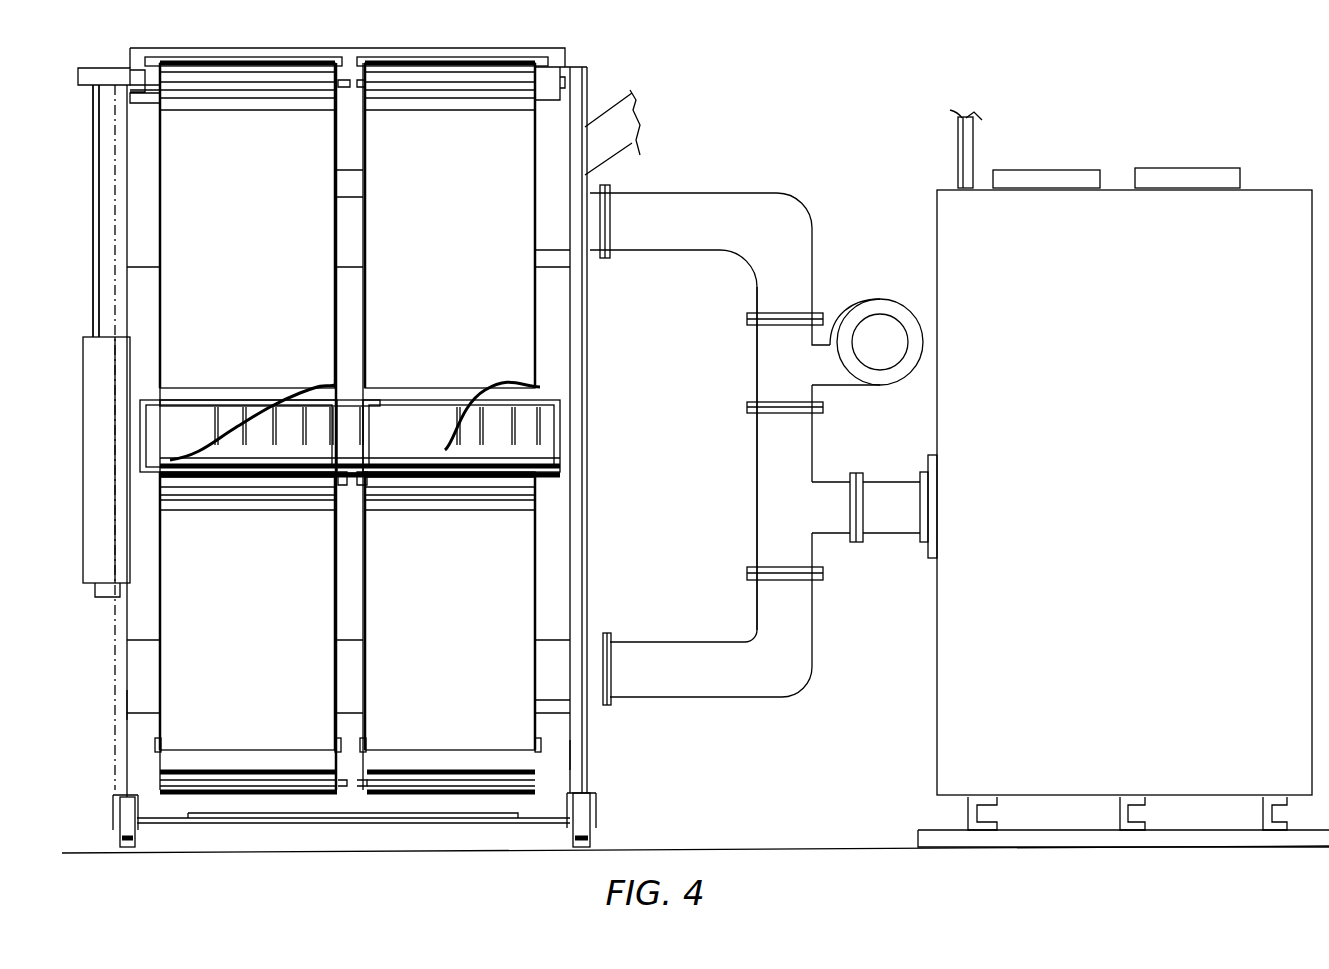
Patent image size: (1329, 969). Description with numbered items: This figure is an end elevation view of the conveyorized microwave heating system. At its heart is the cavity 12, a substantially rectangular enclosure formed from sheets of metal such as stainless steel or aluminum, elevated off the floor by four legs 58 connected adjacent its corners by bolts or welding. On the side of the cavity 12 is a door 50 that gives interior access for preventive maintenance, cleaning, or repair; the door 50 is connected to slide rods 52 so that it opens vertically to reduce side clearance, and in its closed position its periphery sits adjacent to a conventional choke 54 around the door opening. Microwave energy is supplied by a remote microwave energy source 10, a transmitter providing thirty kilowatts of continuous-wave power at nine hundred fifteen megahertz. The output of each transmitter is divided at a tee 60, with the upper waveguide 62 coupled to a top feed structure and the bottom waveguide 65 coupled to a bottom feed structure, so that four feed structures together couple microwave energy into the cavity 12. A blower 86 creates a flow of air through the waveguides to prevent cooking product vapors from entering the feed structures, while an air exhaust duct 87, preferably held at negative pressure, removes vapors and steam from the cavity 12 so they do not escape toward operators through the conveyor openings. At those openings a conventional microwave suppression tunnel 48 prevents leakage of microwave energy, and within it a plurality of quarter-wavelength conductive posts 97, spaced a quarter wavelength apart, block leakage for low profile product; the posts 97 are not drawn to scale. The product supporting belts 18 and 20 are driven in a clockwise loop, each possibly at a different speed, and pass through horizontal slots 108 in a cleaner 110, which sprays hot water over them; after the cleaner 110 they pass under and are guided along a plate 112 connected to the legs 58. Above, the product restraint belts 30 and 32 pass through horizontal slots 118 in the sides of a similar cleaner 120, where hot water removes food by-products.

The microwave energy source 10 is at (1101, 349).
The cavity 12 is at (130, 280).
The belt 18 is at (160, 617).
The belt 20 is at (540, 557).
The product restraint belt 30 is at (155, 148).
The product restraint belt 32 is at (527, 320).
The microwave suppression tunnel 48 is at (550, 400).
The door 50 is at (83, 405).
The slide rods 52 is at (97, 207).
The choke 54 is at (128, 385).
The legs 58 is at (125, 693).
The tee 60 is at (757, 510).
The upper waveguide 62 is at (681, 255).
The bottom waveguide 65 is at (661, 637).
The blower 86 is at (890, 300).
The air exhaust duct 87 is at (612, 160).
The conductive posts 97 is at (255, 422).
The horizontal slots 108 is at (155, 745).
The cleaner 110 is at (145, 723).
The plate 112 is at (570, 780).
The horizontal slots 118 is at (252, 58).
The cleaner 120 is at (440, 55).